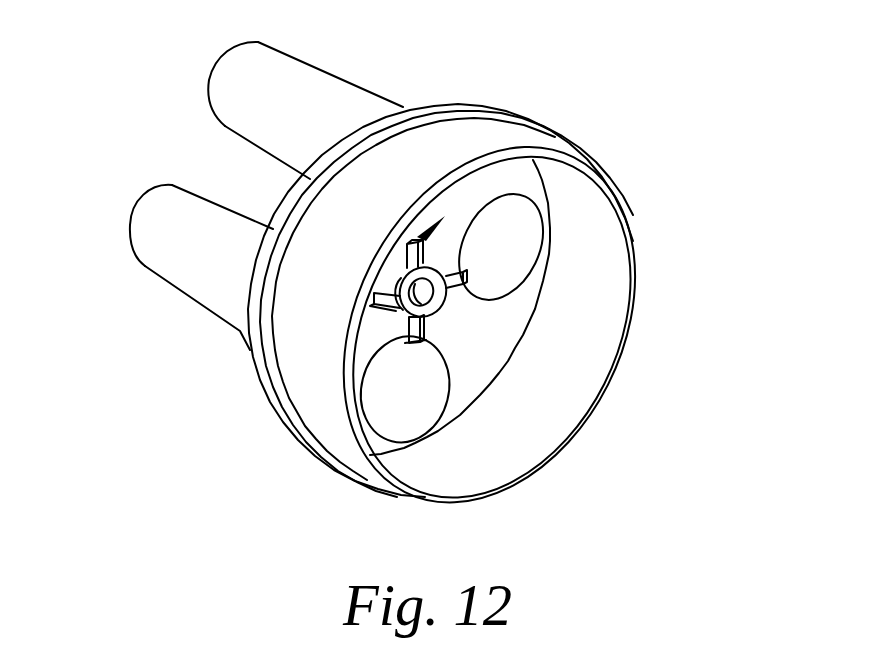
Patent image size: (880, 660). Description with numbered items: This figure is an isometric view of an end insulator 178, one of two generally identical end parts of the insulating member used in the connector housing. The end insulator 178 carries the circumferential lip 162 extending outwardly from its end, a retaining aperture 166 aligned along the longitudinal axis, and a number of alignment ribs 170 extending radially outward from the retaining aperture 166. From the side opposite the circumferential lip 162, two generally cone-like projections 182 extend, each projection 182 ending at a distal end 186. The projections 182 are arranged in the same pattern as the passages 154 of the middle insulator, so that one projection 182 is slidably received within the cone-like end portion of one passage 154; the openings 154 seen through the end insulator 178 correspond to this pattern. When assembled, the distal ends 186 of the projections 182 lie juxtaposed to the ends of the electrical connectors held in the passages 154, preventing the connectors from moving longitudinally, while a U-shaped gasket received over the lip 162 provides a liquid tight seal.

The passage 154 is at (383, 403).
The circumferential lip 162 is at (637, 303).
The retaining aperture 166 is at (417, 313).
The alignment ribs 170 is at (414, 241).
The end insulator 178 is at (488, 100).
The cone-like projection 182 is at (315, 117).
The distal end 186 is at (218, 56).